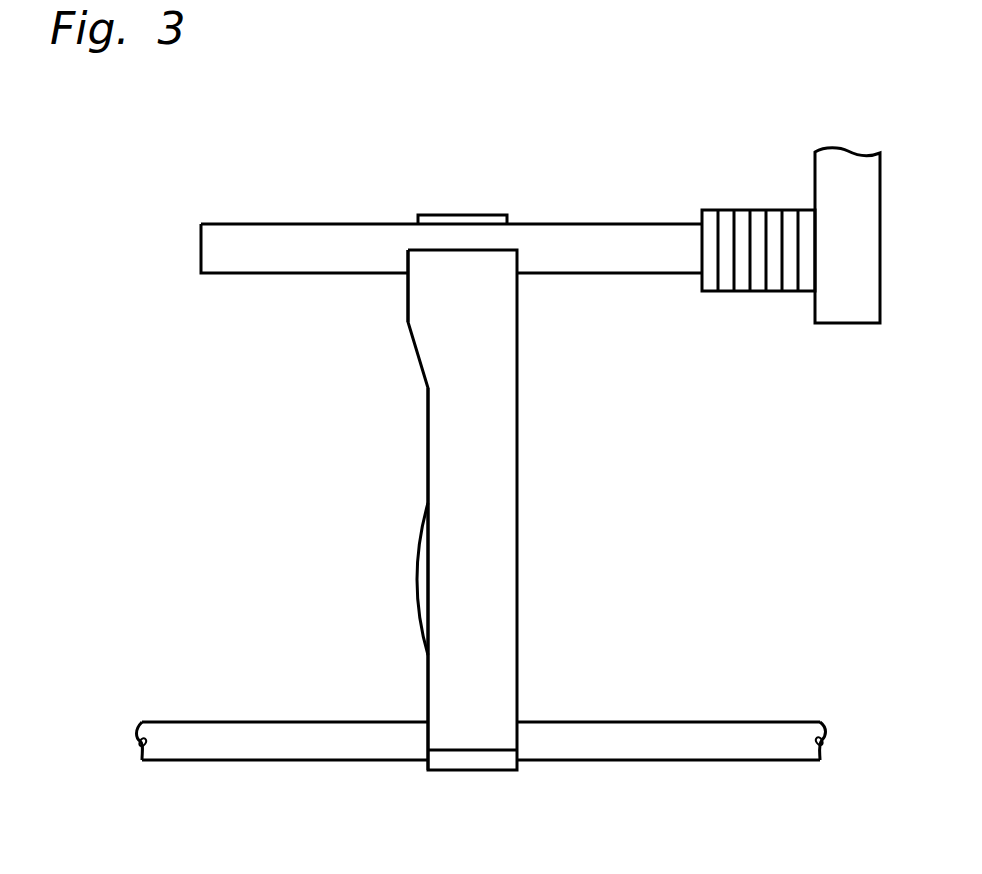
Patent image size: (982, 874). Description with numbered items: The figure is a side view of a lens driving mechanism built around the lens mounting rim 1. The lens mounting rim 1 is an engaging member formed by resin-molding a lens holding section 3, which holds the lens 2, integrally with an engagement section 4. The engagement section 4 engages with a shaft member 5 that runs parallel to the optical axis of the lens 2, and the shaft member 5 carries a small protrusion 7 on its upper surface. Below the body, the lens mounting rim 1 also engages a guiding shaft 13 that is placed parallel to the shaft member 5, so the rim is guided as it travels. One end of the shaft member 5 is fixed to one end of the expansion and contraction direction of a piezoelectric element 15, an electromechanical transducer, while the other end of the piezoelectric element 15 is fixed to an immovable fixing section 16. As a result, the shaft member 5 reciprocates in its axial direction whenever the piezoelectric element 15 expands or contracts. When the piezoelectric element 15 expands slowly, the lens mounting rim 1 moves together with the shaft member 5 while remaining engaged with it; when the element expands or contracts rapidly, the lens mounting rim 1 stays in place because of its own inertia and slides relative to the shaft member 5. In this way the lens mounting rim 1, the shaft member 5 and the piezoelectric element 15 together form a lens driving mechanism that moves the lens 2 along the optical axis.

The lens mounting rim 1 is at (547, 454).
The lens 2 is at (416, 580).
The lens holding section 3 is at (426, 467).
The engagement section 4 is at (406, 314).
The shaft member 5 is at (308, 224).
The protrusion 7 is at (457, 215).
The guiding shaft 13 is at (320, 761).
The piezoelectric element 15 is at (737, 210).
The fixing section 16 is at (852, 324).